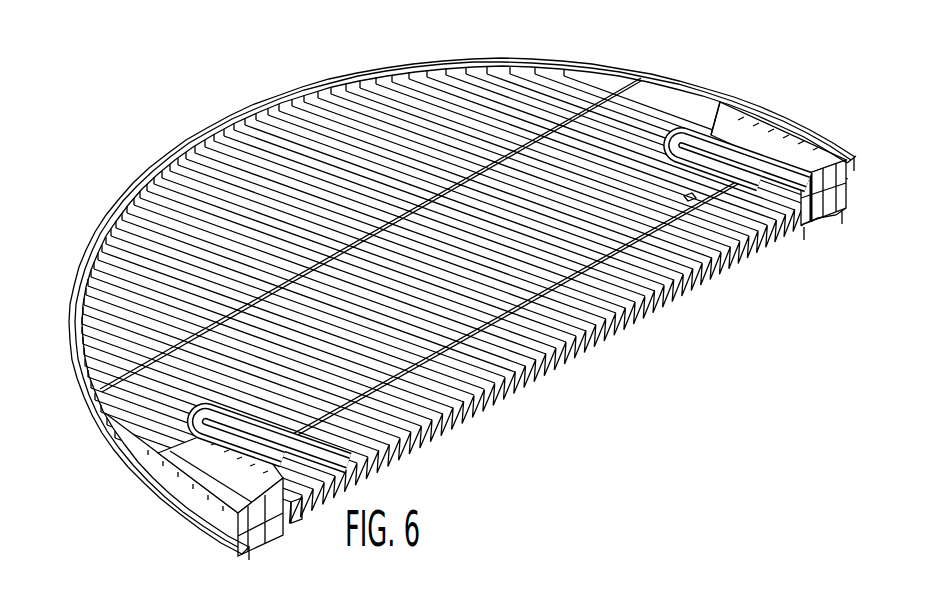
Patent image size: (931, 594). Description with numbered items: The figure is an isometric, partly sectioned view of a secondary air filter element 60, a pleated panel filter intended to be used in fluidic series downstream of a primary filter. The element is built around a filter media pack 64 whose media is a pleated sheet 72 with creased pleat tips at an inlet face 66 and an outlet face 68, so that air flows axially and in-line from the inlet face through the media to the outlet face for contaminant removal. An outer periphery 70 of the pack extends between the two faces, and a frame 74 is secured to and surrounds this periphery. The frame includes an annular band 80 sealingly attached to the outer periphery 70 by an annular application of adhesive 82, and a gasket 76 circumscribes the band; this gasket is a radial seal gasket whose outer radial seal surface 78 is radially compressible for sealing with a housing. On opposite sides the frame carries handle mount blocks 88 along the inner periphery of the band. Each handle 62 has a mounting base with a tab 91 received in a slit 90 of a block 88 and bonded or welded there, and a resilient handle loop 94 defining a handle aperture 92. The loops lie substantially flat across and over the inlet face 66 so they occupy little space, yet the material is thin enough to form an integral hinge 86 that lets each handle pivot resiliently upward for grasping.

The secondary air filter element 60 is at (728, 66).
The handle 62 is at (658, 125).
The filter media pack 64 is at (480, 402).
The inlet face 66 is at (185, 240).
The outlet face 68 is at (292, 520).
The outer periphery 70 is at (93, 243).
The pleated sheet 72 is at (405, 447).
The frame 74 is at (232, 524).
The gasket 76 is at (175, 478).
The outer radial seal surface 78 is at (840, 158).
The annular band 80 is at (840, 192).
The adhesive 82 is at (793, 220).
The integral hinge 86 is at (704, 120).
The handle mount block 88 is at (688, 120).
The slit 90 is at (808, 190).
The tab 91 is at (844, 176).
The handle aperture 92 is at (722, 112).
The handle loop 94 is at (680, 184).